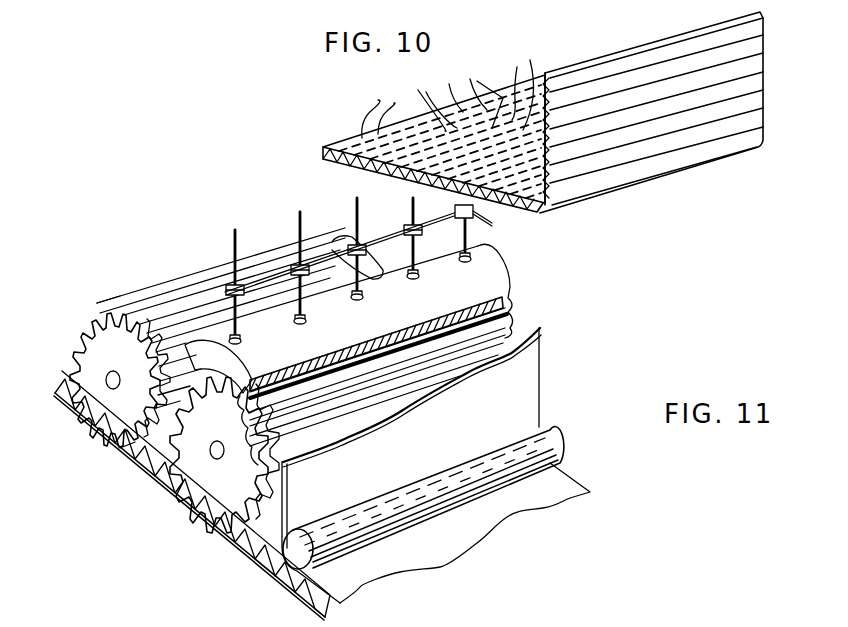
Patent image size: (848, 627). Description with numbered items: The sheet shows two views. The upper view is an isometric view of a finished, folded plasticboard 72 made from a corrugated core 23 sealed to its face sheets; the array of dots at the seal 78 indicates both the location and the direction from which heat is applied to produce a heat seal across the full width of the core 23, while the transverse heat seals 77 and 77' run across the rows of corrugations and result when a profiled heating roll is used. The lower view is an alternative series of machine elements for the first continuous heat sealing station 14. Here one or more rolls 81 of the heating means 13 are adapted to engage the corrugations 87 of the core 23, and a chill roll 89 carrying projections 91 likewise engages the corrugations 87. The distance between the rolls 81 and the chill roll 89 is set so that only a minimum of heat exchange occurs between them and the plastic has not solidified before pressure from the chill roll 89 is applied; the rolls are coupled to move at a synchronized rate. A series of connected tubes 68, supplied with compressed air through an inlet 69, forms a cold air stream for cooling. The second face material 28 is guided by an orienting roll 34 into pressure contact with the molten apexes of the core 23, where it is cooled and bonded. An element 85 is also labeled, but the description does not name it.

In FIG. 11, the heaters 13 is at (137, 307).
In FIG. 11, the first continuous heat sealing station 14 is at (160, 287).
In FIG. 10, the corrugated core 23 is at (512, 213).
In FIG. 11, the corrugated core 23 is at (63, 387).
In FIG. 11, the second face material 28 is at (418, 457).
In FIG. 11, the orienting roll 34 is at (392, 528).
In FIG. 11, the tubes 68 is at (410, 212).
In FIG. 11, the inlet 69 is at (474, 218).
In FIG. 10, the plasticboard 72 is at (772, 100).
In FIG. 10, the heat seals 77 is at (430, 101).
In FIG. 10, the wires 77' is at (465, 88).
In FIG. 10, the heat seal 78 is at (597, 167).
In FIG. 11, the rolls 81 is at (207, 280).
In FIG. 11, the shaft 85 is at (127, 445).
In FIG. 11, the corrugations 87 is at (73, 395).
In FIG. 11, the chill roll 89 is at (420, 368).
In FIG. 11, the projections 91 is at (297, 412).